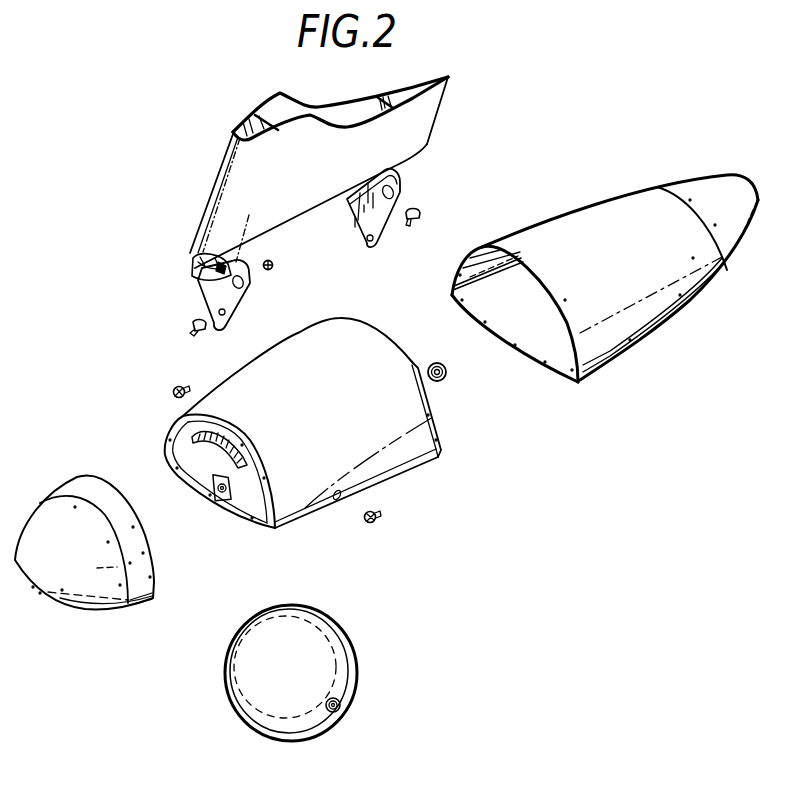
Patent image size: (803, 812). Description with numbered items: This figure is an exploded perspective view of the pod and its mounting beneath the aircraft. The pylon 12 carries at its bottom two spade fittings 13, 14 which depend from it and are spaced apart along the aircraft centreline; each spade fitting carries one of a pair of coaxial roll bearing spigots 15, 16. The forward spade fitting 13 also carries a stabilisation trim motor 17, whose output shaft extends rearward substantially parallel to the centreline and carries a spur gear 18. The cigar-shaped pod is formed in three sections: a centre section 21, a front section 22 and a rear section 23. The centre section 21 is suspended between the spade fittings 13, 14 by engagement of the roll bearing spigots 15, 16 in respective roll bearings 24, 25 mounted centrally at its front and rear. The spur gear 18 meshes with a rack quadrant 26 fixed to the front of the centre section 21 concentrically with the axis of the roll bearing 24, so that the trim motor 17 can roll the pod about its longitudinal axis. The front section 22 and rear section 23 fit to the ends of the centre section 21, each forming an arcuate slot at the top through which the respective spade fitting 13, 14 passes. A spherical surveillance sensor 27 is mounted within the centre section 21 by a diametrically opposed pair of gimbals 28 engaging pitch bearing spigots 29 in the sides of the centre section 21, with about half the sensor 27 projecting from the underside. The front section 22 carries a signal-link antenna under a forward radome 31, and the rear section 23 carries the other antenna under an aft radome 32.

The pylon 12 is at (240, 175).
The forward spade fitting 13 is at (228, 298).
The rear spade fitting 14 is at (401, 178).
The roll bearing spigot 15 is at (190, 330).
The roll bearing spigot 16 is at (411, 226).
The stabilisation trim motor 17 is at (210, 275).
The spur gear 18 is at (273, 267).
The centre section 21 is at (387, 460).
The front section 22 is at (100, 493).
The rear section 23 is at (640, 312).
The roll bearing 24 is at (218, 494).
The roll bearing 25 is at (448, 367).
The rack quadrant 26 is at (231, 447).
The spherical surveillance sensor 27 is at (335, 652).
The gimbals 28 is at (339, 712).
The pitch bearing spigot 29 is at (182, 388).
The forward radome 31 is at (95, 585).
The aft radome 32 is at (707, 197).